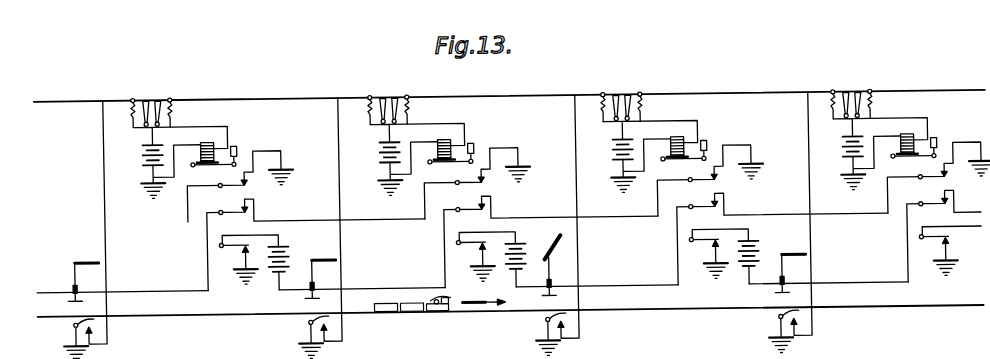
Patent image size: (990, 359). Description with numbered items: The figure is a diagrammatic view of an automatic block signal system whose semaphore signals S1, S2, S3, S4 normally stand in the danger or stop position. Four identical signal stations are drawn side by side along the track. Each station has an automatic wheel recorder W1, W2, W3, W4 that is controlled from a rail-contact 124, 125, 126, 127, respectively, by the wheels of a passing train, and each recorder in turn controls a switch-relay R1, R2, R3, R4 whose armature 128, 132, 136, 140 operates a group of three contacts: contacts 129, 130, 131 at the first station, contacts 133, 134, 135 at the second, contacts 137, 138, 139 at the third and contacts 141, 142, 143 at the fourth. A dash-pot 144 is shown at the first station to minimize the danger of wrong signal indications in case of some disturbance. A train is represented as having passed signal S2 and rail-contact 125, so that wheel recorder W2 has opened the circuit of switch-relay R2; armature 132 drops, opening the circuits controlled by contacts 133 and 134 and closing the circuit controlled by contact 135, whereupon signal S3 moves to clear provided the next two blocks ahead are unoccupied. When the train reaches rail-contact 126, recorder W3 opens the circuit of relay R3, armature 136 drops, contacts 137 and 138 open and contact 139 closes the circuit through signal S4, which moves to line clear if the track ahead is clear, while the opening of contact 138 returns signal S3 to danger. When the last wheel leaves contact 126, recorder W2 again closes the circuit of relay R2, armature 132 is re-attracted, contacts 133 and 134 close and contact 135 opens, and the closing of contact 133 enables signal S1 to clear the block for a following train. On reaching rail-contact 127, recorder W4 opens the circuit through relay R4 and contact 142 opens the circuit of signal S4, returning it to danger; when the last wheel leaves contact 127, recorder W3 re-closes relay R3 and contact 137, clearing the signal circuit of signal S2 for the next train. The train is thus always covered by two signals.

The automatic wheel recorder W1 is at (151, 104).
The automatic wheel recorder W2 is at (388, 101).
The automatic wheel recorder W3 is at (621, 98).
The automatic wheel recorder W4 is at (851, 95).
The switch-relay R1 is at (199, 145).
The switch-relay R2 is at (436, 142).
The switch-relay R3 is at (669, 139).
The switch-relay R4 is at (899, 136).
The semaphore signal S1 is at (84, 282).
The semaphore signal S2 is at (321, 279).
The semaphore signal S3 is at (558, 265).
The semaphore signal S4 is at (791, 273).
The rail-contact 124 is at (106, 331).
The rail-contact 125 is at (332, 323).
The rail-contact 126 is at (569, 323).
The rail-contact 127 is at (811, 331).
The armature 128 is at (212, 164).
The contact 129 is at (224, 187).
The contact 130 is at (238, 213).
The contact 131 is at (236, 247).
The armature 132 is at (449, 164).
The contact 133 is at (461, 187).
The contact 134 is at (475, 213).
The contact 135 is at (473, 247).
The armature 136 is at (682, 164).
The contact 137 is at (694, 187).
The contact 138 is at (708, 213).
The contact 139 is at (706, 247).
The armature 140 is at (912, 164).
The contact 141 is at (924, 187).
The contact 142 is at (938, 213).
The contact 143 is at (936, 247).
The dash-pot 144 is at (239, 146).